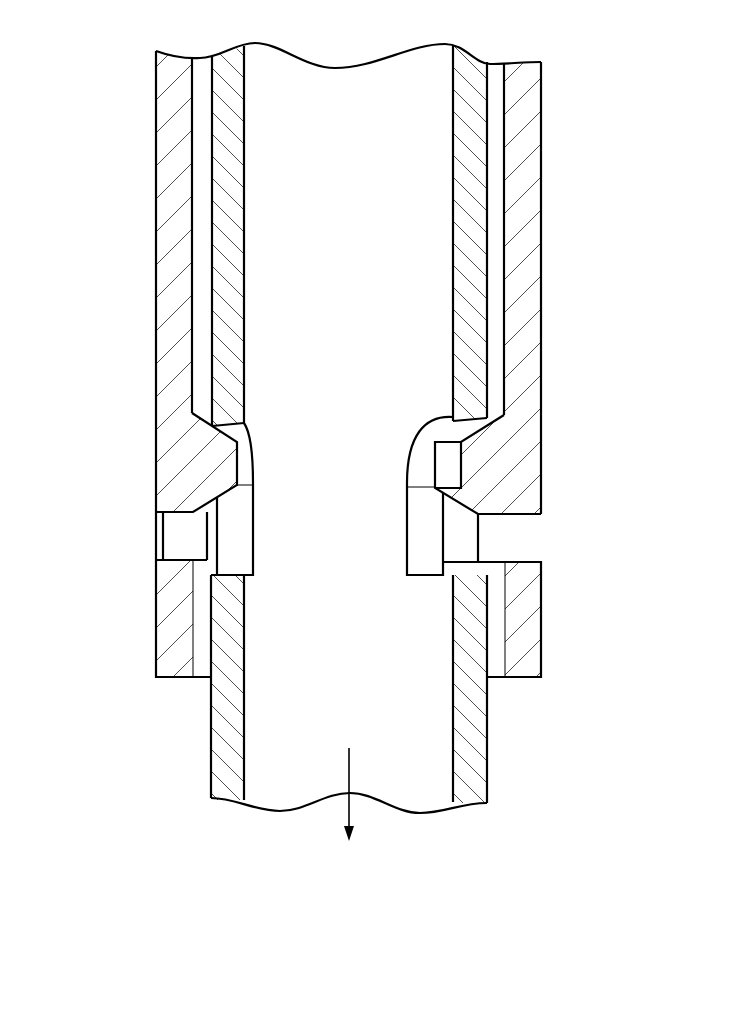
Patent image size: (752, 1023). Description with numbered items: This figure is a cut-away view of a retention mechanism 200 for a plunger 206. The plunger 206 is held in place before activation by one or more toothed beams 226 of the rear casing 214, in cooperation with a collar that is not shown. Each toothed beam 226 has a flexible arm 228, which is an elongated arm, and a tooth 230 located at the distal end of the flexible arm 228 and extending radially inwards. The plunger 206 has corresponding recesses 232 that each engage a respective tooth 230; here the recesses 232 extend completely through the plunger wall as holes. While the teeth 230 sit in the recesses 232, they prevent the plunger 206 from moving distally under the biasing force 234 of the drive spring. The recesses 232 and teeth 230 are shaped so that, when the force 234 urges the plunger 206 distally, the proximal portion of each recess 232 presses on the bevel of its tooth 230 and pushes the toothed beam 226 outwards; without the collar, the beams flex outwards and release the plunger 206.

The retention mechanism 200 is at (122, 51).
The plunger 206 is at (487, 743).
The rear casing 214 is at (542, 617).
The toothed beam 226 is at (613, 63).
The flexible arm 228 is at (543, 177).
The tooth 230 is at (520, 463).
The recess 232 is at (242, 535).
The biasing force 234 is at (370, 876).